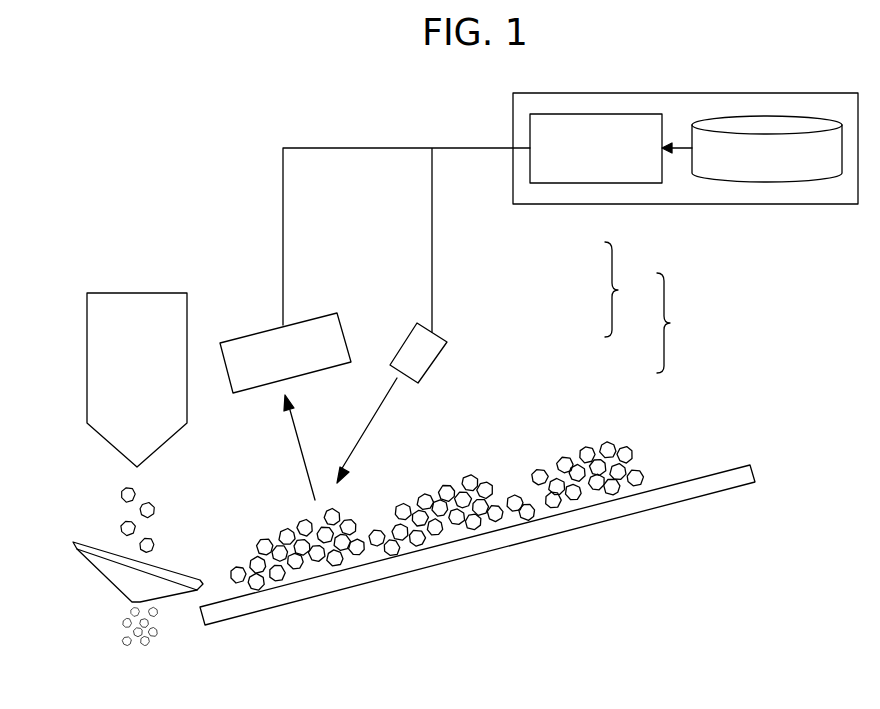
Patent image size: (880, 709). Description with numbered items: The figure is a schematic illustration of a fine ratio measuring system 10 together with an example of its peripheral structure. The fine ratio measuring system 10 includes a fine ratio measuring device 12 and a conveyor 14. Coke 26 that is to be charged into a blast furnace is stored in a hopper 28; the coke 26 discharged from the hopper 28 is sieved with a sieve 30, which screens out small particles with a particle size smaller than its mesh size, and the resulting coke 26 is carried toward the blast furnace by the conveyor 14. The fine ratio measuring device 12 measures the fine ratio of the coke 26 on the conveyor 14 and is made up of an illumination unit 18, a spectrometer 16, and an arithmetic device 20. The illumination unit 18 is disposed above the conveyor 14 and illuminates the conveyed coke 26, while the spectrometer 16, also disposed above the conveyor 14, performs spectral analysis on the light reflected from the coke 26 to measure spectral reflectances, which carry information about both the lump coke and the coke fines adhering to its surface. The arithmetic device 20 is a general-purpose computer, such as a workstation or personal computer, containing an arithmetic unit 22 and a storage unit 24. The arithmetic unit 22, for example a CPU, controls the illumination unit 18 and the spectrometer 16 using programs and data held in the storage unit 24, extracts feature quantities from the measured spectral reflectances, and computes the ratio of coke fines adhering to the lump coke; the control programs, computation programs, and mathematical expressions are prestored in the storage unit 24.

The fine ratio measuring system 10 is at (677, 323).
The fine ratio measuring device 12 is at (625, 289).
The conveyor 14 is at (673, 484).
The spectrometer 16 is at (343, 328).
The illumination unit 18 is at (447, 342).
The arithmetic device 20 is at (685, 163).
The arithmetic unit 22 is at (600, 114).
The storage unit 24 is at (768, 114).
The coke 26 is at (587, 450).
The hopper 28 is at (138, 293).
The sieve 30 is at (77, 551).